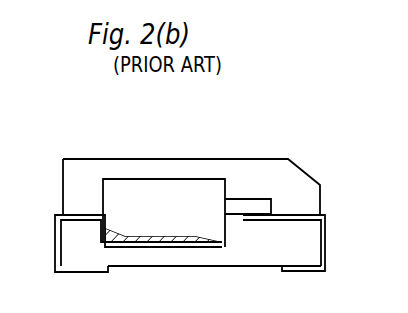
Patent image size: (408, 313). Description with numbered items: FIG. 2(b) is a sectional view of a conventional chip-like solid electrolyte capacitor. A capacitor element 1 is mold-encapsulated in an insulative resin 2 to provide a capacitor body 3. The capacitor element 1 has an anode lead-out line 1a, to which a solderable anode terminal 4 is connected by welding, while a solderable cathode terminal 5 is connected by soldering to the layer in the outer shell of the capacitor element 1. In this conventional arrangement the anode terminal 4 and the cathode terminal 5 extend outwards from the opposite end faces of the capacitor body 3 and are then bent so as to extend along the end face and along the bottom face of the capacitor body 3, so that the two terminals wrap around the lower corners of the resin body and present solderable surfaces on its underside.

The capacitor element 1 is at (188, 187).
The anode lead-out line 1a is at (262, 203).
The insulative resin 2 is at (252, 167).
The capacitor body 3 is at (177, 152).
The anode terminal 4 is at (323, 248).
The cathode terminal 5 is at (55, 248).